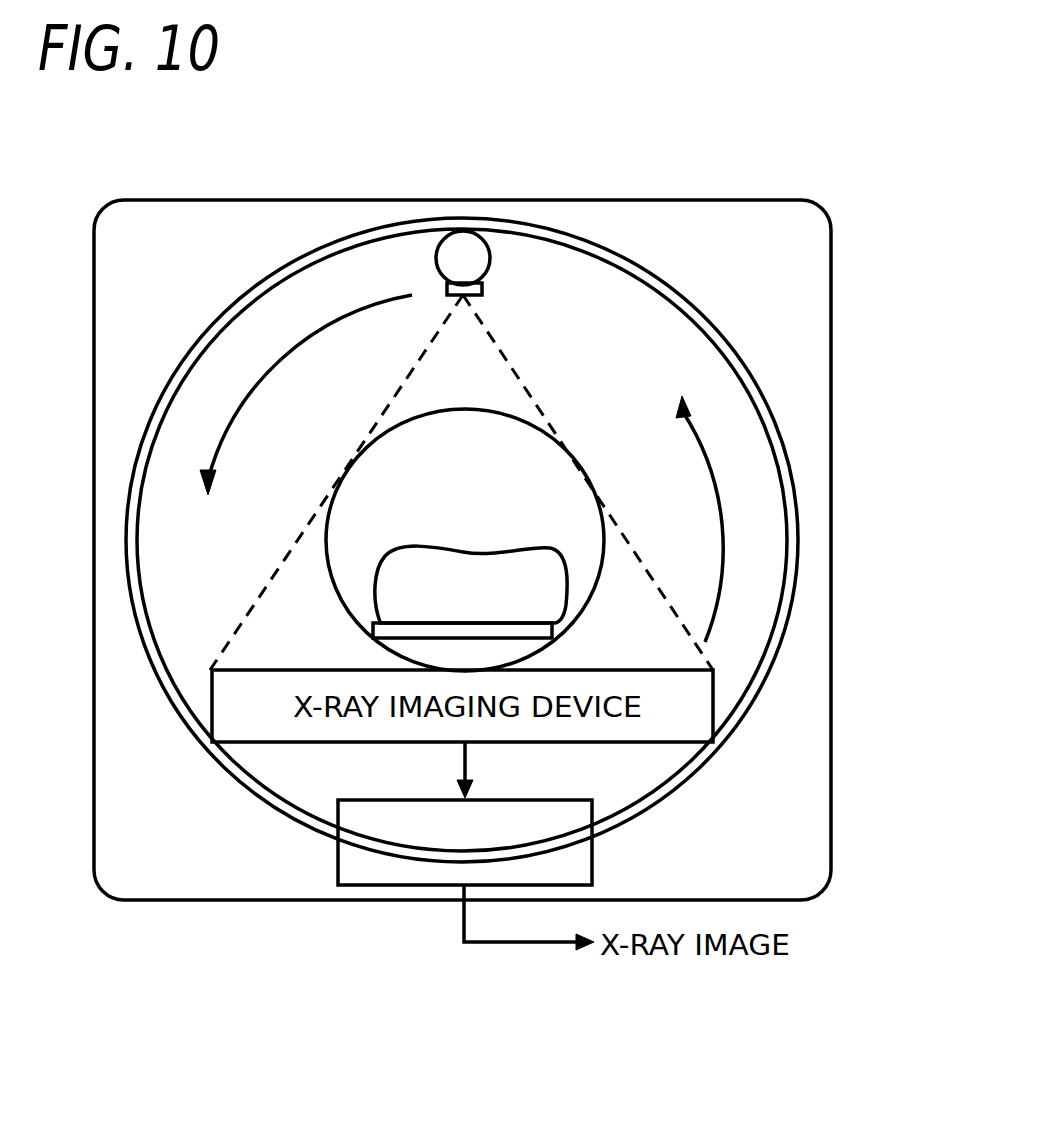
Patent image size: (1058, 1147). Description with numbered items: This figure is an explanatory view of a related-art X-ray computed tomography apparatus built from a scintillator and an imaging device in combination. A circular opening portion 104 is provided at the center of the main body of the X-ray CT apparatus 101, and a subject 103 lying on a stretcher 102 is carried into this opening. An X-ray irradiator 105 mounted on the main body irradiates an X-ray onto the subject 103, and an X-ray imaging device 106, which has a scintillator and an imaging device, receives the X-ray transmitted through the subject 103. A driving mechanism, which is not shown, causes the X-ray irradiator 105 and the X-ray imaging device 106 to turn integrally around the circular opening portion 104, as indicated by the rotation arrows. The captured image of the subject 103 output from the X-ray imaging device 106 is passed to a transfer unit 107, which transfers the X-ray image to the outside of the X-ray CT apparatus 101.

The X-ray CT apparatus 101 is at (831, 273).
The stretcher 102 is at (543, 628).
The subject 103 is at (415, 563).
The circular opening portion 104 is at (548, 447).
The X-ray irradiator 105 is at (478, 263).
The X-ray imaging device 106 is at (652, 747).
The transfer unit 107 is at (592, 865).